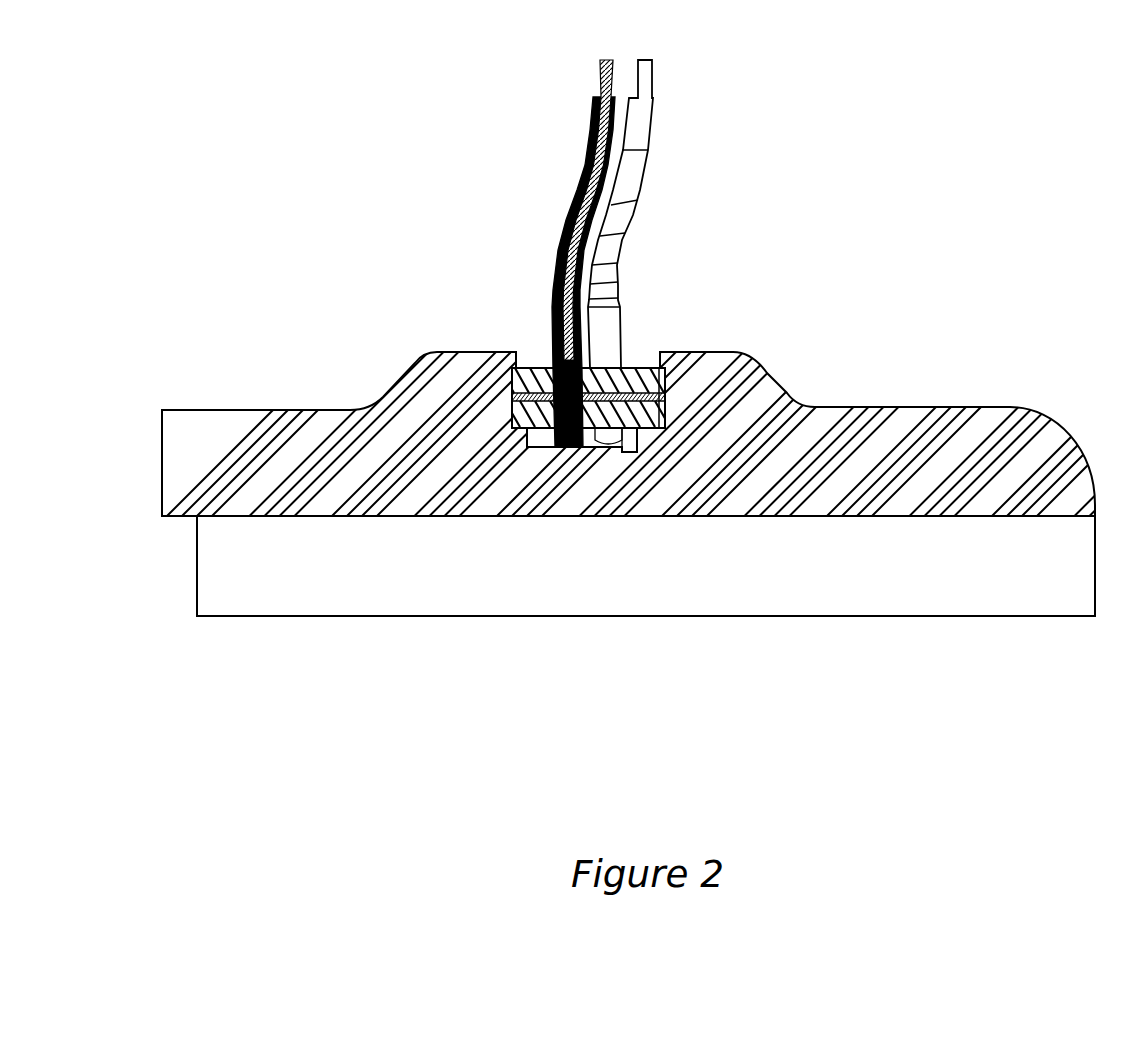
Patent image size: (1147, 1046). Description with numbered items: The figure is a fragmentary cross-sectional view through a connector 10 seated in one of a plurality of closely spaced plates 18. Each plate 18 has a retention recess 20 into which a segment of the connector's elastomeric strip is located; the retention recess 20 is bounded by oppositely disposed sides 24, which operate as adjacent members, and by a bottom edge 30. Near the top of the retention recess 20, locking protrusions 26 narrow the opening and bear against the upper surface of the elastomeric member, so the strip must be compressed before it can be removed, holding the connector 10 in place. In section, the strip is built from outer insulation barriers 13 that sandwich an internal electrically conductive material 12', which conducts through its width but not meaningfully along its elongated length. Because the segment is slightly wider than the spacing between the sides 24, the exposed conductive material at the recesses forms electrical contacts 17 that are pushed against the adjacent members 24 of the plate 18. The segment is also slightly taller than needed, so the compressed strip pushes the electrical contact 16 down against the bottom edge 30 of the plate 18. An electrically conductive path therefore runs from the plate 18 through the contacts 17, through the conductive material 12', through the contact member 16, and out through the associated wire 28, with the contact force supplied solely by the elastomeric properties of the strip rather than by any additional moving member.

The connector 10 is at (718, 200).
The internal electrically conductive material 12' is at (524, 314).
The insulation barriers 13 is at (650, 433).
The electrical contact 16 is at (560, 440).
The electrical contacts 17 is at (512, 393).
The plate 18 is at (202, 432).
The retention recess 20 is at (537, 436).
The sides 24 is at (520, 440).
The locking protrusions 26 is at (508, 353).
The wire 28 is at (600, 78).
The bottom edge 30 is at (574, 442).